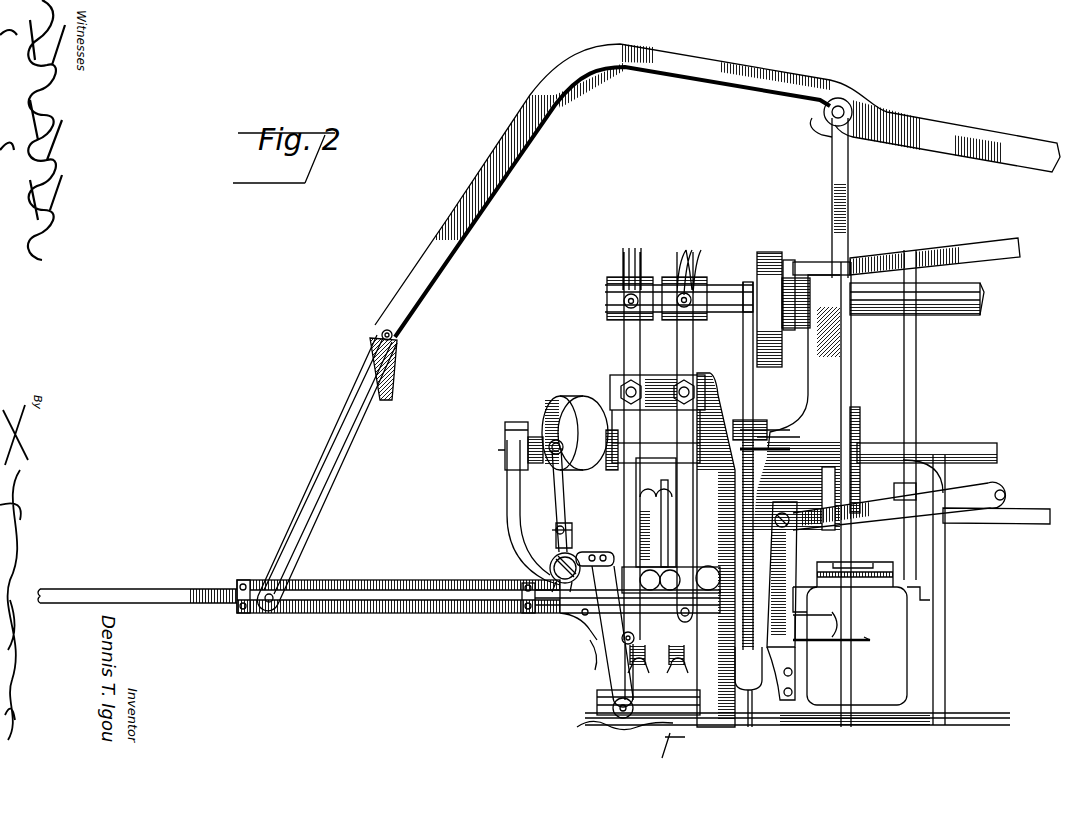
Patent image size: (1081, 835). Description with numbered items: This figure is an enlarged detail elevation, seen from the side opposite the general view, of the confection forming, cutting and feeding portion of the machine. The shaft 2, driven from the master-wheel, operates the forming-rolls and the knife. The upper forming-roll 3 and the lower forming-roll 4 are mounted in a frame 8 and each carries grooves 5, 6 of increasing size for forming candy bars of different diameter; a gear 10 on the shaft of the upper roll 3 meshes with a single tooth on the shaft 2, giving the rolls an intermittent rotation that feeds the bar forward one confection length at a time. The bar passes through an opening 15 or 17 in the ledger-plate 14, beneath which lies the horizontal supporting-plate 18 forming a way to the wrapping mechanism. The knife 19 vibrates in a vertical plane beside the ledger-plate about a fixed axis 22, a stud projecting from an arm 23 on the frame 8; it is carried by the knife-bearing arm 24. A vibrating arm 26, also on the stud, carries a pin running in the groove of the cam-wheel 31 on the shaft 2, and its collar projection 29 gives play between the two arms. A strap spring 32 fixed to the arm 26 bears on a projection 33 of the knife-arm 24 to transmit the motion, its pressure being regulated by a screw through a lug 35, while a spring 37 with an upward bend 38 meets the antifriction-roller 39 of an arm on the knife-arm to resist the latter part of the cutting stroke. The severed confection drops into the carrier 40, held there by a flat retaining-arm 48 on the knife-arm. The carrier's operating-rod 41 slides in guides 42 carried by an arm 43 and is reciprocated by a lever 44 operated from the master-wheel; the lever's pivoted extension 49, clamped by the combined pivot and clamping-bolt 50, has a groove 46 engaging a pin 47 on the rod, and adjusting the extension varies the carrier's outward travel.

The shaft 2 is at (648, 452).
The upper forming-roll 3 is at (644, 492).
The lower forming-roll 4 is at (700, 670).
The groove 5 is at (648, 670).
The groove 6 is at (681, 670).
The frame 8 is at (584, 663).
The gear 10 is at (650, 444).
The ledger-plate 14 is at (702, 596).
The opening 15 is at (614, 574).
The opening 17 is at (729, 504).
The supporting-plate 18 is at (640, 615).
The knife 19 is at (696, 436).
The fixed axis 22 is at (568, 613).
The arm 23 is at (507, 522).
The knife-bearing arm 24 is at (510, 530).
The vibrating arm 26 is at (552, 535).
The projection 29 is at (583, 614).
The cam-wheel 31 is at (560, 405).
The strap spring 32 is at (550, 458).
The projection 33 is at (550, 568).
The lug 35 is at (548, 452).
The spring 37 is at (520, 452).
The upward bend 38 is at (585, 718).
The antifriction-roller 39 is at (627, 720).
The carrier 40 is at (625, 660).
The operating-rod 41 is at (272, 610).
The guides 42 is at (240, 613).
The arm 43 is at (432, 613).
The lever 44 is at (748, 91).
The groove 46 is at (315, 483).
The pin 47 is at (168, 584).
The retaining-arm 48 is at (613, 560).
The pivoted extension 49 is at (338, 472).
The combined pivot and clamping-bolt 50 is at (393, 336).